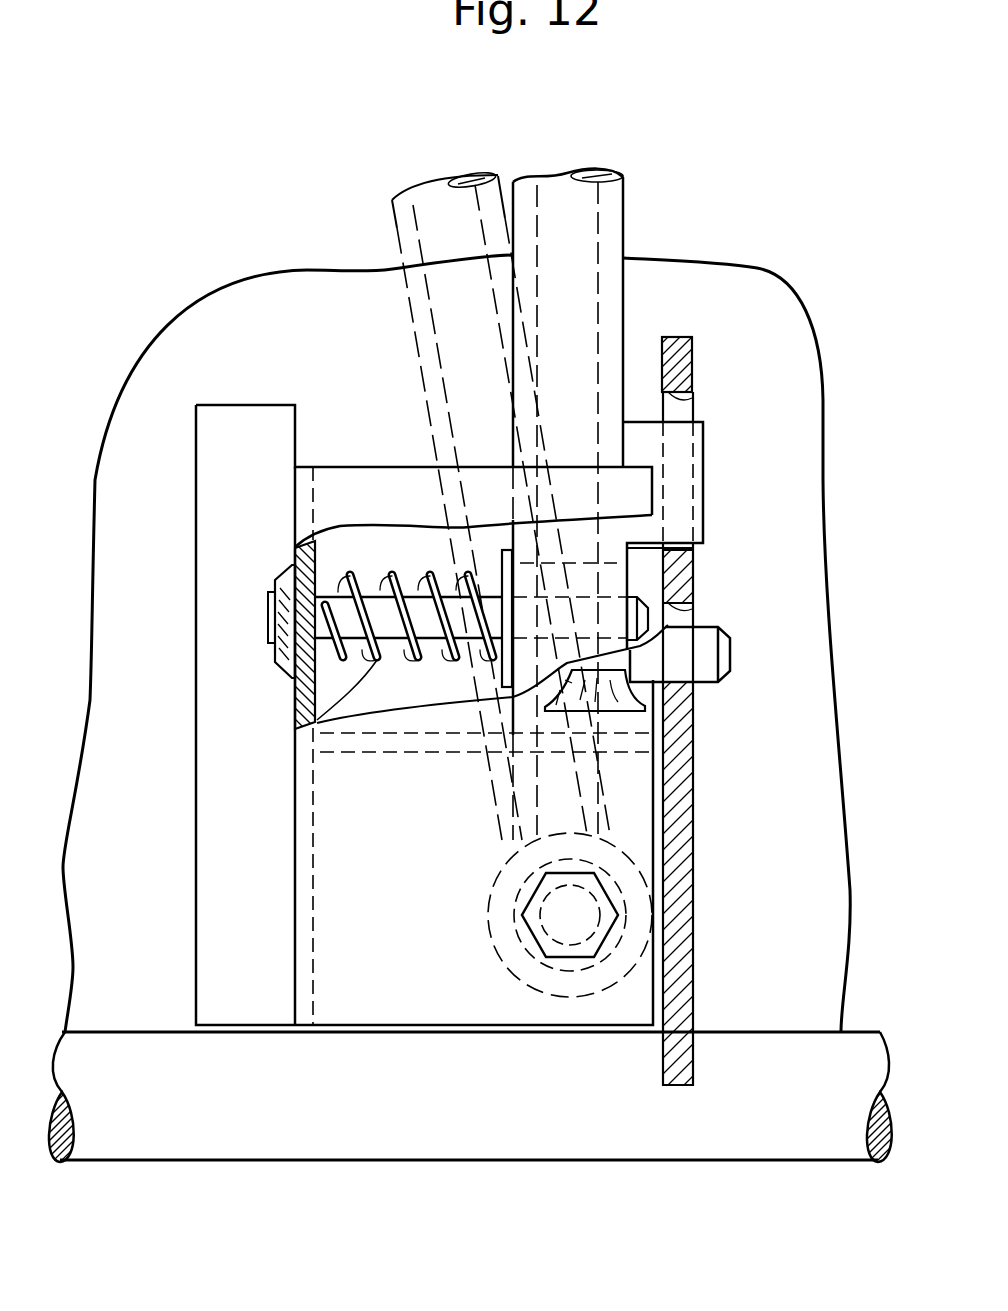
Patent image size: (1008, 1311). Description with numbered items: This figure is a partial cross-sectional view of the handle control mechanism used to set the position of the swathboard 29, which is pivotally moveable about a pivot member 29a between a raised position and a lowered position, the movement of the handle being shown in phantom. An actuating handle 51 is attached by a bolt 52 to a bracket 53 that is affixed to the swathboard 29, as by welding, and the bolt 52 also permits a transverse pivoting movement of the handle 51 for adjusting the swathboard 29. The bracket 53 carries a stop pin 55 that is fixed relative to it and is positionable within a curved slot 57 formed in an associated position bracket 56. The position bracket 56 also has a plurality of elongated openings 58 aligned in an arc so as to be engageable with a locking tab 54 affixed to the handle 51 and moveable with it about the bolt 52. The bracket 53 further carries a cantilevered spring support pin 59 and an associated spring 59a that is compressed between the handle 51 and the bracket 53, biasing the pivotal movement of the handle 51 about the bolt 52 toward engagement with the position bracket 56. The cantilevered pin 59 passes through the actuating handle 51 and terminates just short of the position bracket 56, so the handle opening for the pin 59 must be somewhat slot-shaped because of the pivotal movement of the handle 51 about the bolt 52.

The swathboard 29 is at (730, 282).
The pivot member 29a is at (703, 1146).
The actuating handle 51 is at (392, 227).
The bolt 52 is at (580, 908).
The bracket 53 is at (625, 700).
The locking tab 54 is at (566, 416).
The stop pin 55 is at (732, 655).
The position bracket 56 is at (693, 827).
The curved slot 57 is at (693, 617).
The elongated openings 58 is at (692, 404).
The spring support pin 59 is at (633, 598).
The spring 59a is at (302, 719).